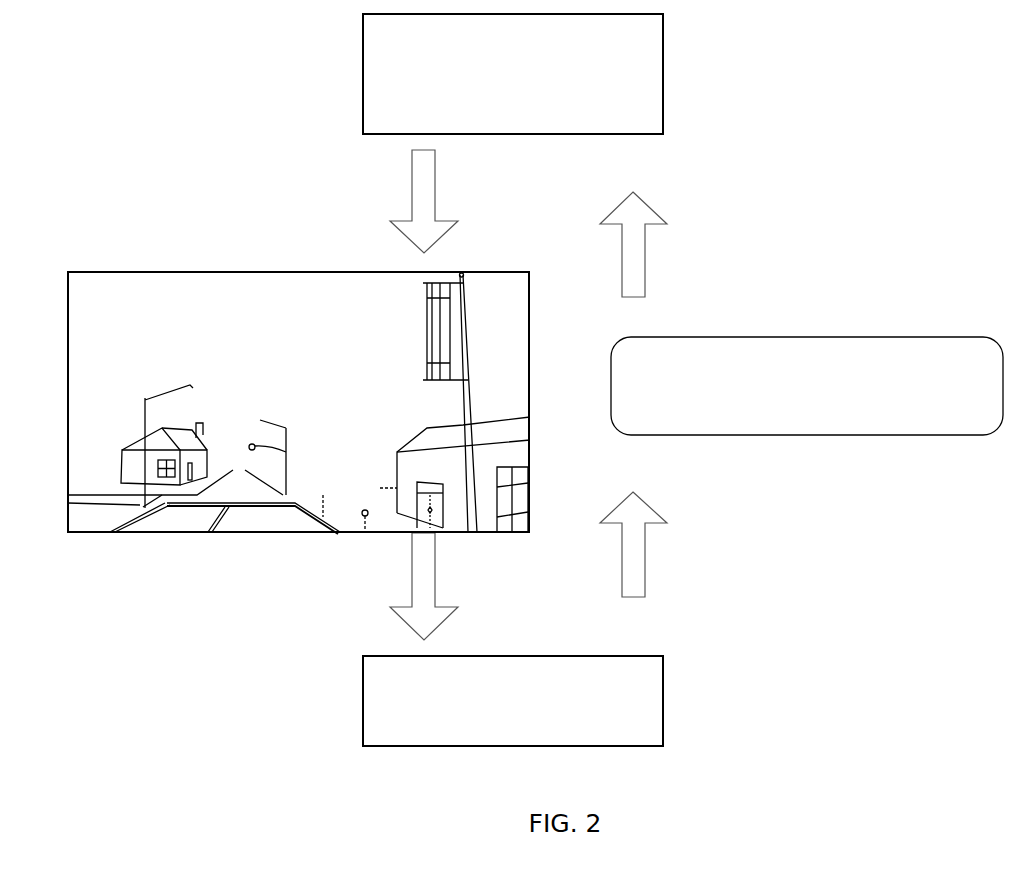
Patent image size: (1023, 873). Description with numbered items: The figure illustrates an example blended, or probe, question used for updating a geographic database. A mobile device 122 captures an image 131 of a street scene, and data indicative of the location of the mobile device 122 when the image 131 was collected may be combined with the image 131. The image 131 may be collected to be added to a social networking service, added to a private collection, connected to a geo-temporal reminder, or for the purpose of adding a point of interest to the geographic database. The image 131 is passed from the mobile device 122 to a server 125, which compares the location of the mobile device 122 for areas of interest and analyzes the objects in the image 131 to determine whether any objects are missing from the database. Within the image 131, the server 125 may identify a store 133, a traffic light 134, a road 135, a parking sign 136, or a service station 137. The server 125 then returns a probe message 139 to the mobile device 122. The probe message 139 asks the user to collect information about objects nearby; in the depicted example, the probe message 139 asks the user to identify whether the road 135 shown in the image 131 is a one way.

The mobile device 122 is at (513, 74).
The server 125 is at (513, 701).
The image 131 is at (198, 271).
The store 133 is at (126, 458).
The traffic light 134 is at (254, 444).
The road 135 is at (297, 522).
The parking sign 136 is at (362, 518).
The service station 137 is at (413, 443).
The probe message 139 is at (797, 334).